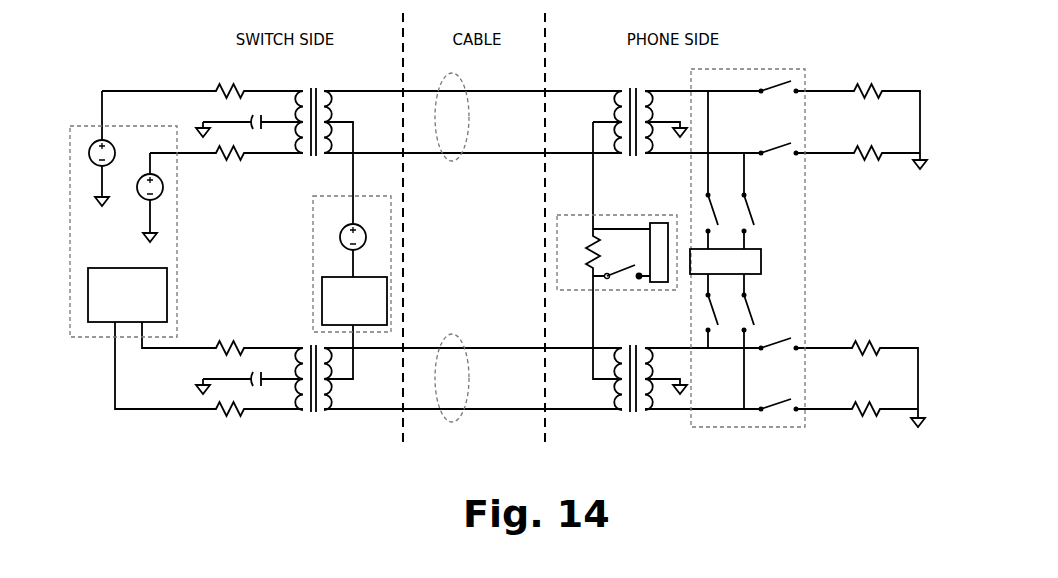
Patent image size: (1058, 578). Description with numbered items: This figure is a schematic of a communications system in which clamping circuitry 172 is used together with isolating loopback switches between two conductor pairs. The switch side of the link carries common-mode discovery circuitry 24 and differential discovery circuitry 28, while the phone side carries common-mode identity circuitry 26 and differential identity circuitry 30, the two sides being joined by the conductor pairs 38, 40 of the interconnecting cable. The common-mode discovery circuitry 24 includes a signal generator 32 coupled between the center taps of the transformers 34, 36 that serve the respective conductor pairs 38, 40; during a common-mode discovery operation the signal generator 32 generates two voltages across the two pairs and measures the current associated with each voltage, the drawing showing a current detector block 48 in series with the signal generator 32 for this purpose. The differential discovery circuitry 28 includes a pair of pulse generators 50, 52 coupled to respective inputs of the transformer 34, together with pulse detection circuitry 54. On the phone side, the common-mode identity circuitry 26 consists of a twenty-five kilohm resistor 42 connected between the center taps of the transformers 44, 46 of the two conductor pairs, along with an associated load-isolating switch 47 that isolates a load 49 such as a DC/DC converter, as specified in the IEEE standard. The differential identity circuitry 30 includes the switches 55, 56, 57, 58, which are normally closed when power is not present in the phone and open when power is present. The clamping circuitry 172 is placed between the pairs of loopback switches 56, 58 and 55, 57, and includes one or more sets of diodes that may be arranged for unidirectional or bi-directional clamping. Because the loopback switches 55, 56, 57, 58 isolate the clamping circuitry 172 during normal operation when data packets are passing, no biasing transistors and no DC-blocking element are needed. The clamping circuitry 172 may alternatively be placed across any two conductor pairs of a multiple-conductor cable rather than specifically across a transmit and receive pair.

The common-mode discovery circuitry 24 is at (391, 267).
The common-mode identity circuitry 26 is at (604, 215).
The differential discovery circuitry 28 is at (177, 233).
The differential identity circuitry 30 is at (805, 272).
The signal generator 32 is at (365, 225).
The transformer 34 is at (300, 90).
The transformer 36 is at (293, 412).
The conductor pair 38 is at (452, 160).
The conductor pair 40 is at (455, 421).
The resistor 42 is at (583, 257).
The transformer 44 is at (657, 90).
The transformer 46 is at (647, 411).
The load-isolating switch 47 is at (664, 285).
The current detector 48 is at (354, 301).
The load 49 is at (612, 282).
The pulse generator 50 is at (115, 152).
The pulse generator 52 is at (163, 187).
The pulse detection circuitry 54 is at (127, 295).
The switch 55 is at (748, 308).
The switch 56 is at (713, 202).
The switch 57 is at (713, 303).
The switch 58 is at (748, 205).
The clamping circuitry 172 is at (755, 248).